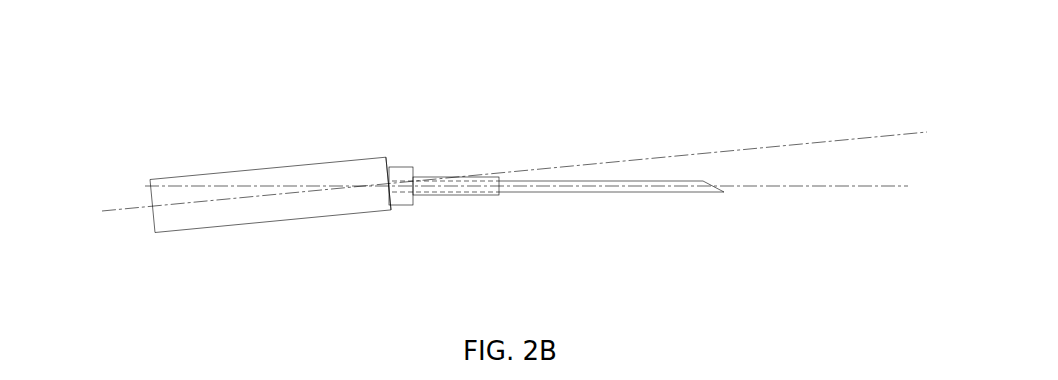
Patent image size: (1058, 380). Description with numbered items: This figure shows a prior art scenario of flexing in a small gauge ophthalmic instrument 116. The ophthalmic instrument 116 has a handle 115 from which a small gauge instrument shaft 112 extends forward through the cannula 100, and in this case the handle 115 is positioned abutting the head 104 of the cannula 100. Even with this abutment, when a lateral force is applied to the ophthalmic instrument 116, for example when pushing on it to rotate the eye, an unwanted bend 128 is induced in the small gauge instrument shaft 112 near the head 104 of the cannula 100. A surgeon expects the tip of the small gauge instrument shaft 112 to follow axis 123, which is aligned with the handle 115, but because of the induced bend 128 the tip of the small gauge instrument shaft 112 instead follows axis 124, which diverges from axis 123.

The cannula 100 is at (468, 195).
The head of the cannula 104 is at (413, 169).
The small gauge instrument shaft 112 is at (587, 192).
The handle 115 is at (367, 167).
The ophthalmic instrument 116 is at (203, 222).
The axis 123 is at (723, 148).
The axis 124 is at (772, 185).
The bend 128 is at (393, 176).